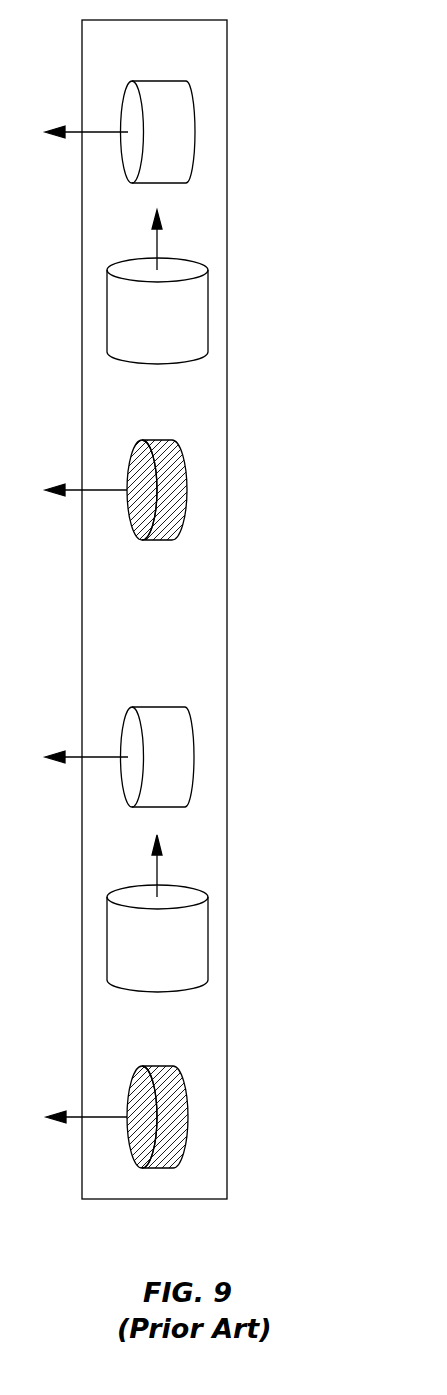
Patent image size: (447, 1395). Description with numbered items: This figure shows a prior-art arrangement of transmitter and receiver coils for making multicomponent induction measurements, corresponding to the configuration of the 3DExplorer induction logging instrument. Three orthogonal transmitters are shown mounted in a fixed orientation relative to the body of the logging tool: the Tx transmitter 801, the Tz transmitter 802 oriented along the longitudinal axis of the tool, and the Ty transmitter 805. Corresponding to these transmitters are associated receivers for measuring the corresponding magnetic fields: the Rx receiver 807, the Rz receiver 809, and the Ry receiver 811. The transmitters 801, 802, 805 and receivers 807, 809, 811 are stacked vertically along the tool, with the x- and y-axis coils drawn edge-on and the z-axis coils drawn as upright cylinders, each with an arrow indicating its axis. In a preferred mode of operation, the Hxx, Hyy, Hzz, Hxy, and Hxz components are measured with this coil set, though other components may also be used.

The Tx transmitter 801 is at (278, 147).
The transmitter z-axis coil (Tz) 802 is at (278, 318).
The Ty transmitter 805 is at (277, 490).
The Rx receiver 807 is at (277, 775).
The Rz receiver 809 is at (277, 945).
The Ry receiver 811 is at (278, 1118).